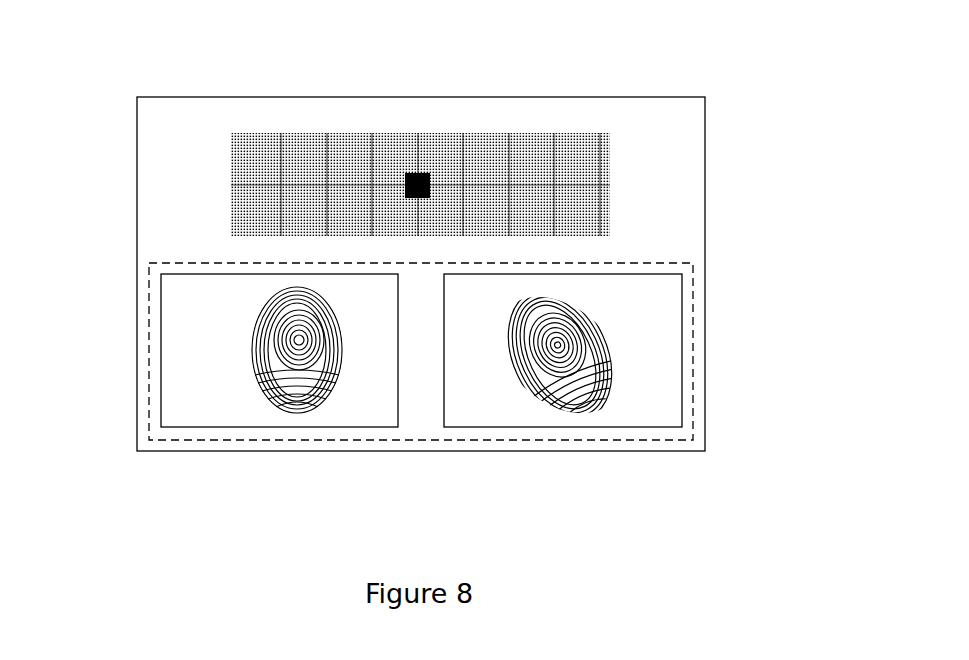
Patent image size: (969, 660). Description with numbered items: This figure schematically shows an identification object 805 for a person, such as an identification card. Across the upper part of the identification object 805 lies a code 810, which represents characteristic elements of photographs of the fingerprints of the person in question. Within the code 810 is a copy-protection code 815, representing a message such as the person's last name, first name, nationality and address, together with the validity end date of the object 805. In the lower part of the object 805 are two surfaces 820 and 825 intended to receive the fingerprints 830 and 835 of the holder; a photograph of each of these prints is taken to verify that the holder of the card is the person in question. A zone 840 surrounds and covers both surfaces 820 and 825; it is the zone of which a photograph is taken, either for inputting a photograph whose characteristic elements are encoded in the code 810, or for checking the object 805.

The identification object 805 is at (692, 109).
The code 810 is at (303, 155).
The copy-protection code 815 is at (410, 175).
The surface 820 is at (183, 323).
The surface 825 is at (670, 333).
The fingerprint 830 is at (290, 378).
The fingerprint 835 is at (563, 380).
The zone 840 is at (422, 417).